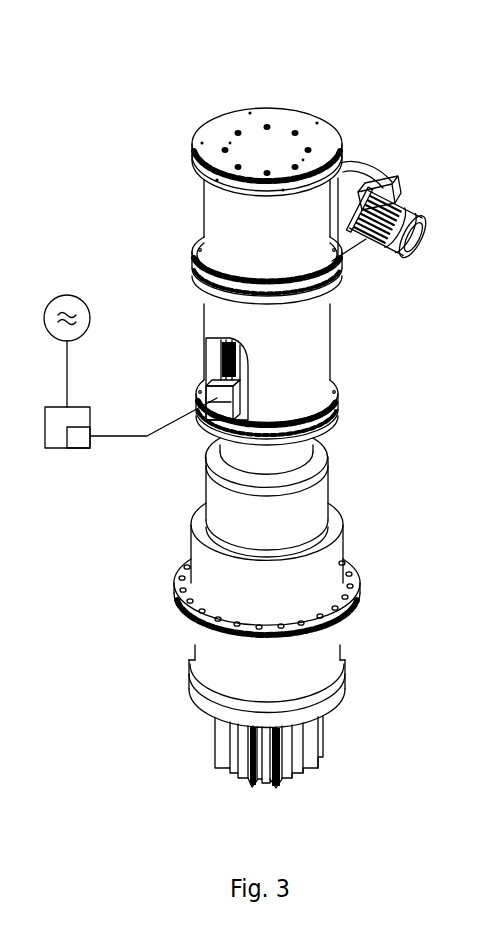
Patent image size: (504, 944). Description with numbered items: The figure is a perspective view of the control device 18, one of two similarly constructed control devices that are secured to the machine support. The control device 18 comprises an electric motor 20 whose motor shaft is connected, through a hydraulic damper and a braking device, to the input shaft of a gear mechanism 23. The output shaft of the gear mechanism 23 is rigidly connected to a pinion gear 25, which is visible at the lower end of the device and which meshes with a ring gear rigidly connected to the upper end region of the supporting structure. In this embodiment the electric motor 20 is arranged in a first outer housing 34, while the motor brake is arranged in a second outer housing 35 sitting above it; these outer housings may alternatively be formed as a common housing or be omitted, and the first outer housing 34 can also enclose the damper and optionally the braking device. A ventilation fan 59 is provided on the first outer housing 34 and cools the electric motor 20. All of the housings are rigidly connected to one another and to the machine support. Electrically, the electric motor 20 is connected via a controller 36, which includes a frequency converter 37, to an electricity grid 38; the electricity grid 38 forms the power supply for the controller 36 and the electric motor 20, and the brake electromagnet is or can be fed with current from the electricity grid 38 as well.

The control device 18 is at (188, 78).
The electric motor 20 is at (218, 352).
The gear mechanism 23 is at (205, 641).
The pinion gear 25 is at (218, 752).
The first outer housing 34 is at (326, 352).
The second outer housing 35 is at (212, 212).
The controller 36 is at (55, 449).
The frequency converter 37 is at (83, 449).
The electricity grid 38 is at (75, 296).
The ventilation fan 59 is at (372, 170).